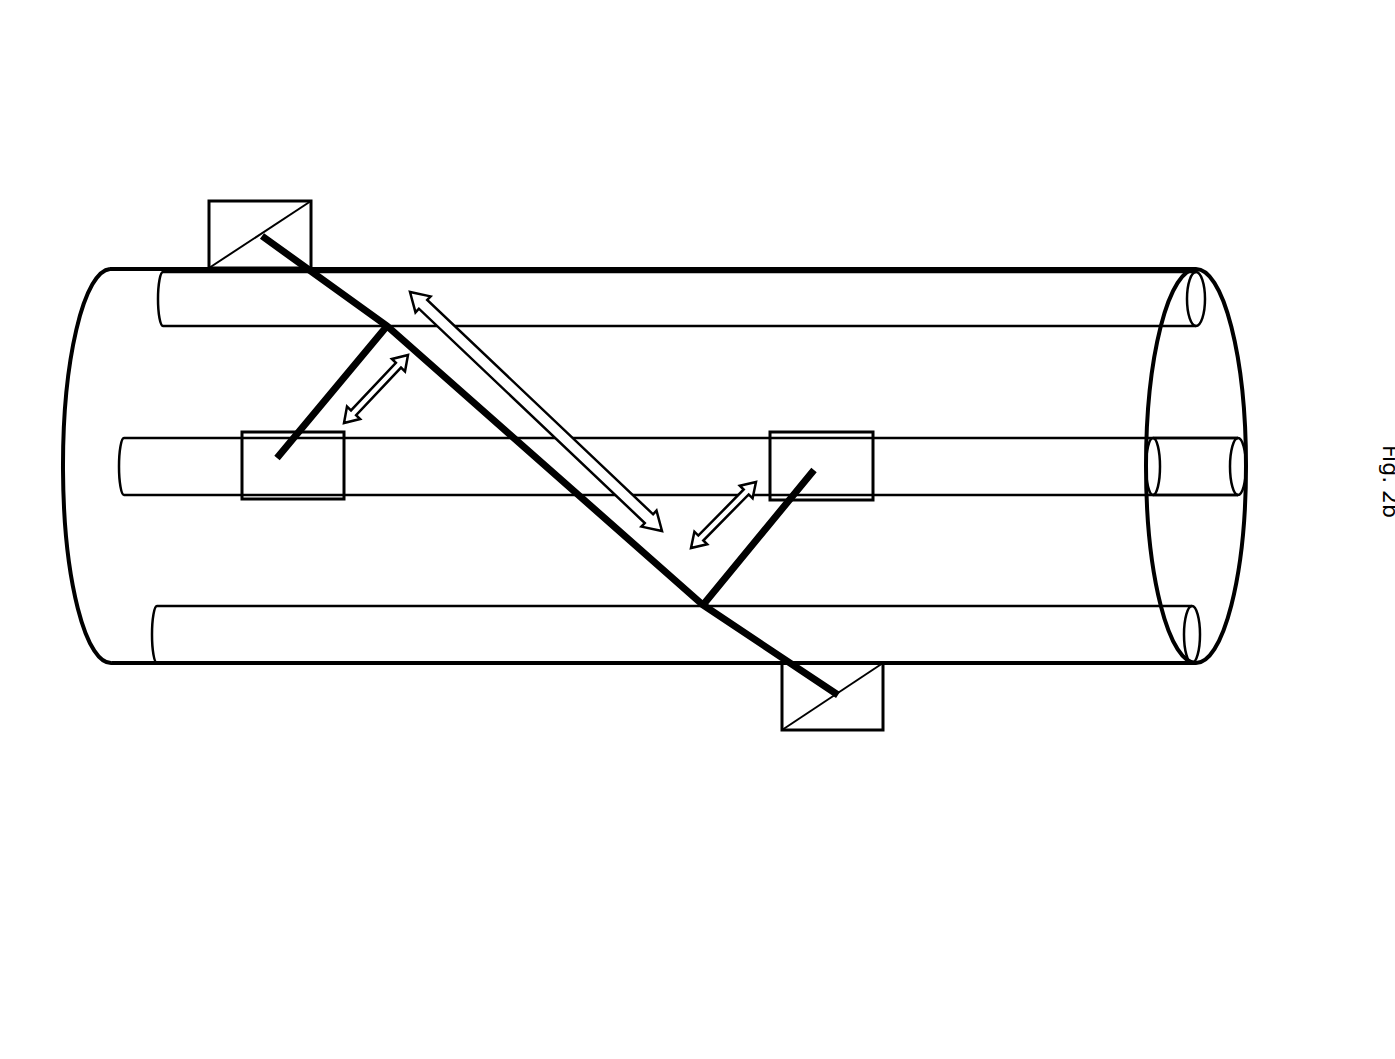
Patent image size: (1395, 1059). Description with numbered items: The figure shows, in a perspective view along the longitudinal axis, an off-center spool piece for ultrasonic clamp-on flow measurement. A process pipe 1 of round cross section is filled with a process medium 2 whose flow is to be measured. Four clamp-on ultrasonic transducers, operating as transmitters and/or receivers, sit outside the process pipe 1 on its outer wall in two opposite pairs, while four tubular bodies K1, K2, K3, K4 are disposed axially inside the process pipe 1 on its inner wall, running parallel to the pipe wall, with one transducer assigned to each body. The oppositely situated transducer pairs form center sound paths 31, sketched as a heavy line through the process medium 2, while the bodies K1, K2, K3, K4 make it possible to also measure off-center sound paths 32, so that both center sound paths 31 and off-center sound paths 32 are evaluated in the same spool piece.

The process pipe 1 is at (1221, 645).
The process medium 2 is at (1069, 552).
The center sound paths 31 is at (545, 403).
The off-center sound paths 32 is at (380, 406).
The body K1 is at (979, 637).
The body K2 is at (158, 499).
The body K3 is at (1197, 292).
The body K4 is at (1207, 476).